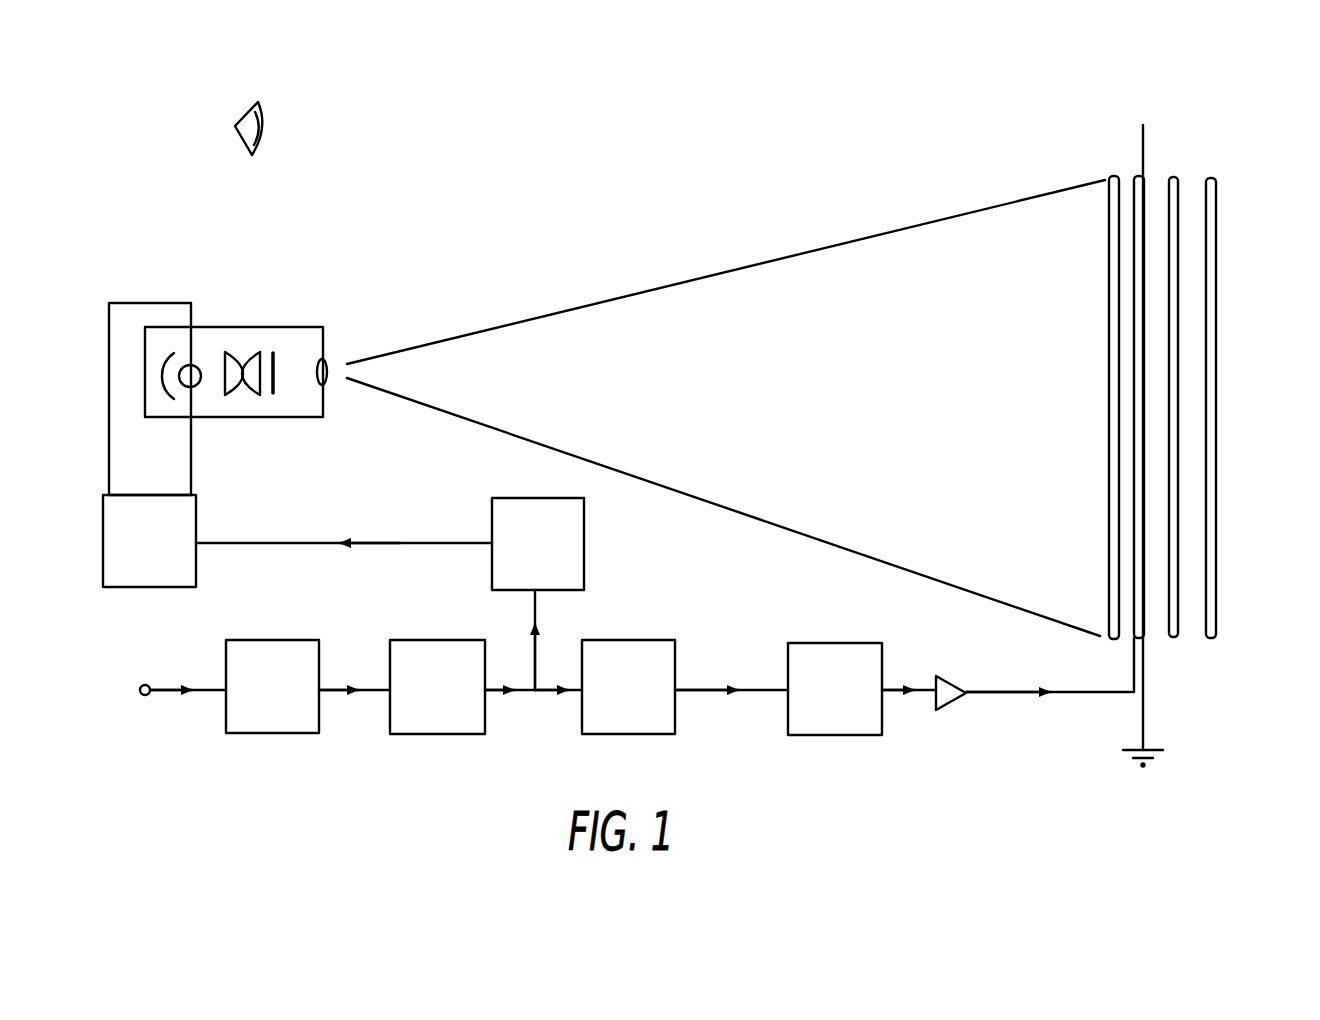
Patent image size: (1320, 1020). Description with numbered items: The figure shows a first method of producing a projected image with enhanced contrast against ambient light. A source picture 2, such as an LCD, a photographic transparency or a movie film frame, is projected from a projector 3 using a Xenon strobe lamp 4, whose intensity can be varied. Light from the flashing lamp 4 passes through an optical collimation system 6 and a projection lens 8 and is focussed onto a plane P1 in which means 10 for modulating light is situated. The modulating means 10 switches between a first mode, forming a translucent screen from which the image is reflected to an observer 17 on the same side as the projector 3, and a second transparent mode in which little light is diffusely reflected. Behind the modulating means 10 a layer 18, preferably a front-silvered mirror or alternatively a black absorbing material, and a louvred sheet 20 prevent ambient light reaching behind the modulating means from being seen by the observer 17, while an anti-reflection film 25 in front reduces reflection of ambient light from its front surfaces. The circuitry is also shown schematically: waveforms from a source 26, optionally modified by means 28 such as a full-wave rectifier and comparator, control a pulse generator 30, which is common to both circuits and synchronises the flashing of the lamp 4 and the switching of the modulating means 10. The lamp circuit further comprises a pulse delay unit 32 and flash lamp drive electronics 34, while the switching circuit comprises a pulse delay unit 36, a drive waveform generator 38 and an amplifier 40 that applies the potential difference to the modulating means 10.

The source picture 2 is at (283, 352).
The projector 3 is at (195, 256).
The Xenon strobe lamp 4 is at (195, 384).
The optical collimation system 6 is at (184, 340).
The projection lens 8 is at (330, 365).
The means for modulating light 10 is at (1138, 175).
The observer 17 is at (252, 100).
The layer 18 is at (1211, 177).
The louvred sheet 20 is at (1175, 175).
The anti-reflection film 25 is at (1113, 174).
The source 26 is at (171, 706).
The means for modifying waveforms 28 is at (256, 703).
The pulse generator 30 is at (423, 704).
The pulse delay unit 32 is at (525, 555).
The flash lamp drive electronics 34 is at (136, 550).
The pulse delay unit 36 is at (613, 704).
The drive waveform generator 38 is at (823, 706).
The amplifier 40 is at (1031, 691).
The plane P1 is at (1143, 425).